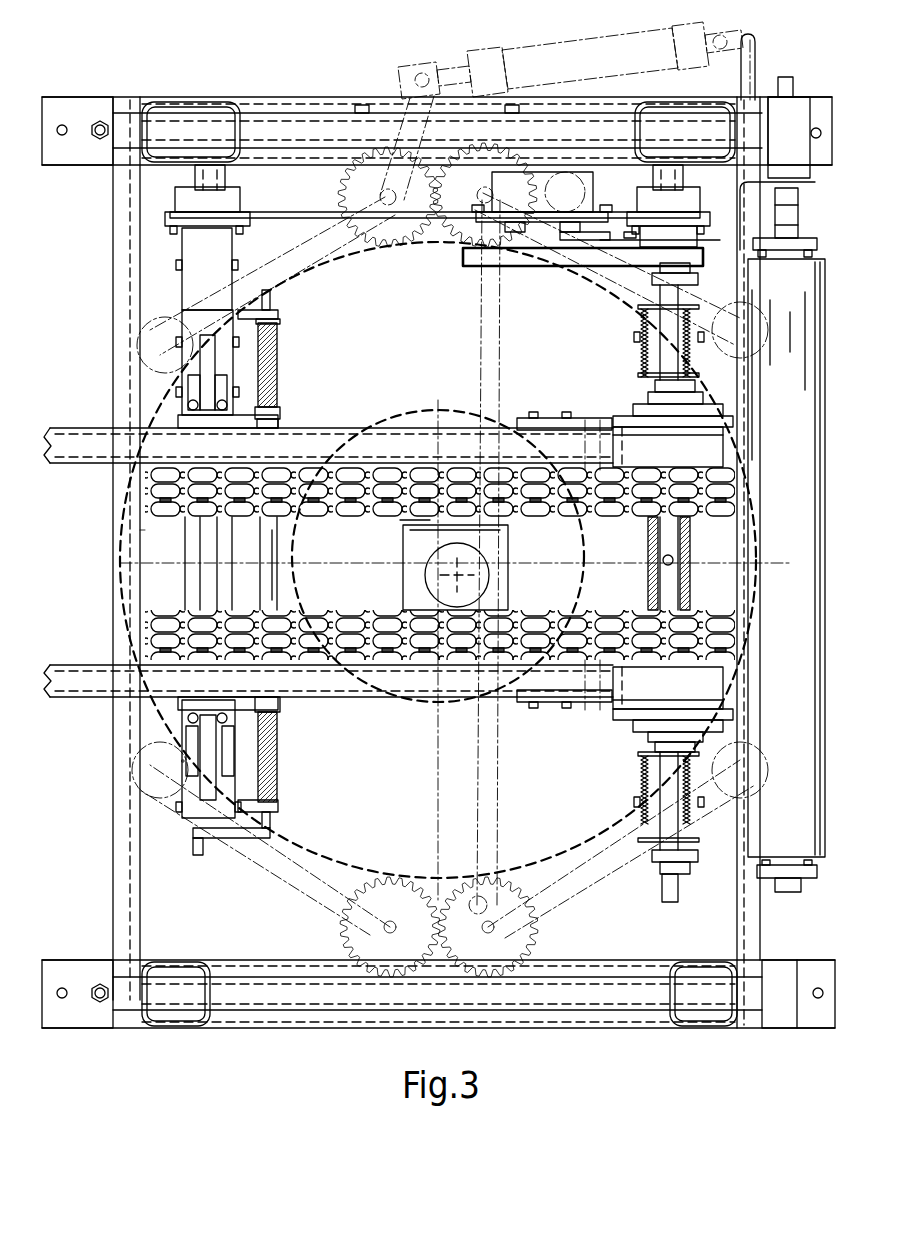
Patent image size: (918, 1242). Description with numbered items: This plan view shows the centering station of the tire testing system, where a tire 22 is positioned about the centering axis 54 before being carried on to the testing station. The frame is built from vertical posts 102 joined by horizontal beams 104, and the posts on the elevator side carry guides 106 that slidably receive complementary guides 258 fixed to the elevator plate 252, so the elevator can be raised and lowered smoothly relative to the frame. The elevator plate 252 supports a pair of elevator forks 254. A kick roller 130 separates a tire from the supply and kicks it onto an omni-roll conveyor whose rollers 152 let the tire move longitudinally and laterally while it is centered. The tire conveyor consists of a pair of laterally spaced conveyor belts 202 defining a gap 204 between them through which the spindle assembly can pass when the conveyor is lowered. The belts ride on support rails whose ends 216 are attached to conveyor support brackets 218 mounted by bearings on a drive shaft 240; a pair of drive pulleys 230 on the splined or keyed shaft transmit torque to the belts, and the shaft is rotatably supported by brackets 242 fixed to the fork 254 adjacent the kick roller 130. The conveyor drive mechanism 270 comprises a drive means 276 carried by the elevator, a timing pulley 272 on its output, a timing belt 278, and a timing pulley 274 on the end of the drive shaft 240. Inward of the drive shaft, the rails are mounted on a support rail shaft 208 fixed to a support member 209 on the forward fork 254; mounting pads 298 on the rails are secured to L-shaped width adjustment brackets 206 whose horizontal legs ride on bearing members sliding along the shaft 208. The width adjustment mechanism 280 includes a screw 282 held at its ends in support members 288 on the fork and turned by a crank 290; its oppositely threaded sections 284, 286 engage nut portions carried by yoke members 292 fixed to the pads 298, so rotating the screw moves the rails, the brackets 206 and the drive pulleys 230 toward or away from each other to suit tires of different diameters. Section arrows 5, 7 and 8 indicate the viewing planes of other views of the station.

The section line 5 is at (848, 42).
The section line 7 is at (40, 80).
The section line 8 is at (250, 285).
The tire 22 is at (438, 560).
The centering axis 54 is at (438, 565).
The vertical posts 102 is at (182, 112).
The horizontal beams 104 is at (127, 250).
The guides 106 is at (210, 178).
The kick roller 130 is at (785, 328).
The rollers 152 is at (305, 470).
The conveyor belts 202 is at (75, 445).
The gap 204 is at (100, 516).
The width adjustment brackets 206 is at (178, 412).
The support rail shaft 208 is at (215, 597).
The support member 209 is at (190, 575).
The rail ends 216 is at (557, 445).
The conveyor support brackets 218 is at (592, 440).
The drive pulleys 230 is at (690, 445).
The drive shaft 240 is at (668, 555).
The brackets 242 is at (690, 285).
The elevator plate 252 is at (278, 213).
The elevator forks 254 is at (648, 765).
The guides 258 is at (195, 205).
The conveyor drive mechanism 270 is at (560, 170).
The timing pulley 272 is at (475, 268).
The timing pulley 274 is at (622, 272).
The drive means 276 is at (578, 175).
The timing belt 278 is at (488, 268).
The width adjustment mechanism 280 is at (162, 780).
The adjustment screw 282 is at (270, 540).
The left-hand threaded screw section 284 is at (268, 742).
The right-hand threaded screw section 286 is at (268, 368).
The support members 288 is at (265, 305).
The crank 290 is at (218, 838).
The yoke members 292 is at (278, 415).
The mounting pads 298 is at (178, 418).